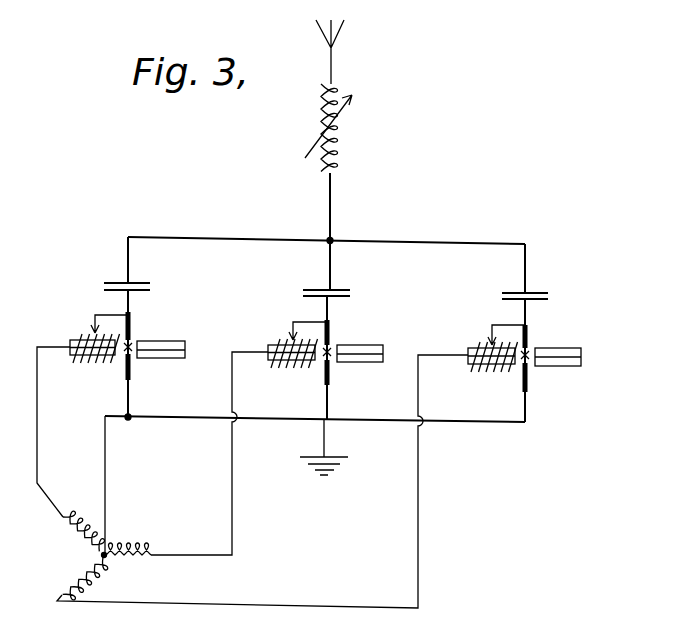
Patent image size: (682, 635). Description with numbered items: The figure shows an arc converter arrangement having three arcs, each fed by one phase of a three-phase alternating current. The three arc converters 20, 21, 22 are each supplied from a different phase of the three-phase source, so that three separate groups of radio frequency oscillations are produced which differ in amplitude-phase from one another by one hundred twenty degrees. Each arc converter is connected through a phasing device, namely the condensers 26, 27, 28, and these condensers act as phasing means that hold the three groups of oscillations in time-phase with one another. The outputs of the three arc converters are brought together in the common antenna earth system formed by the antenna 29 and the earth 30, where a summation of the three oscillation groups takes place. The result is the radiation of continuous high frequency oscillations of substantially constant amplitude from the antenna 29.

The antenna 29 is at (336, 45).
The condenser 26 is at (143, 281).
The condenser 27 is at (350, 283).
The condenser 28 is at (566, 283).
The arc converter 20 is at (135, 335).
The arc converter 21 is at (340, 338).
The arc converter 22 is at (540, 338).
The earth 30 is at (338, 470).